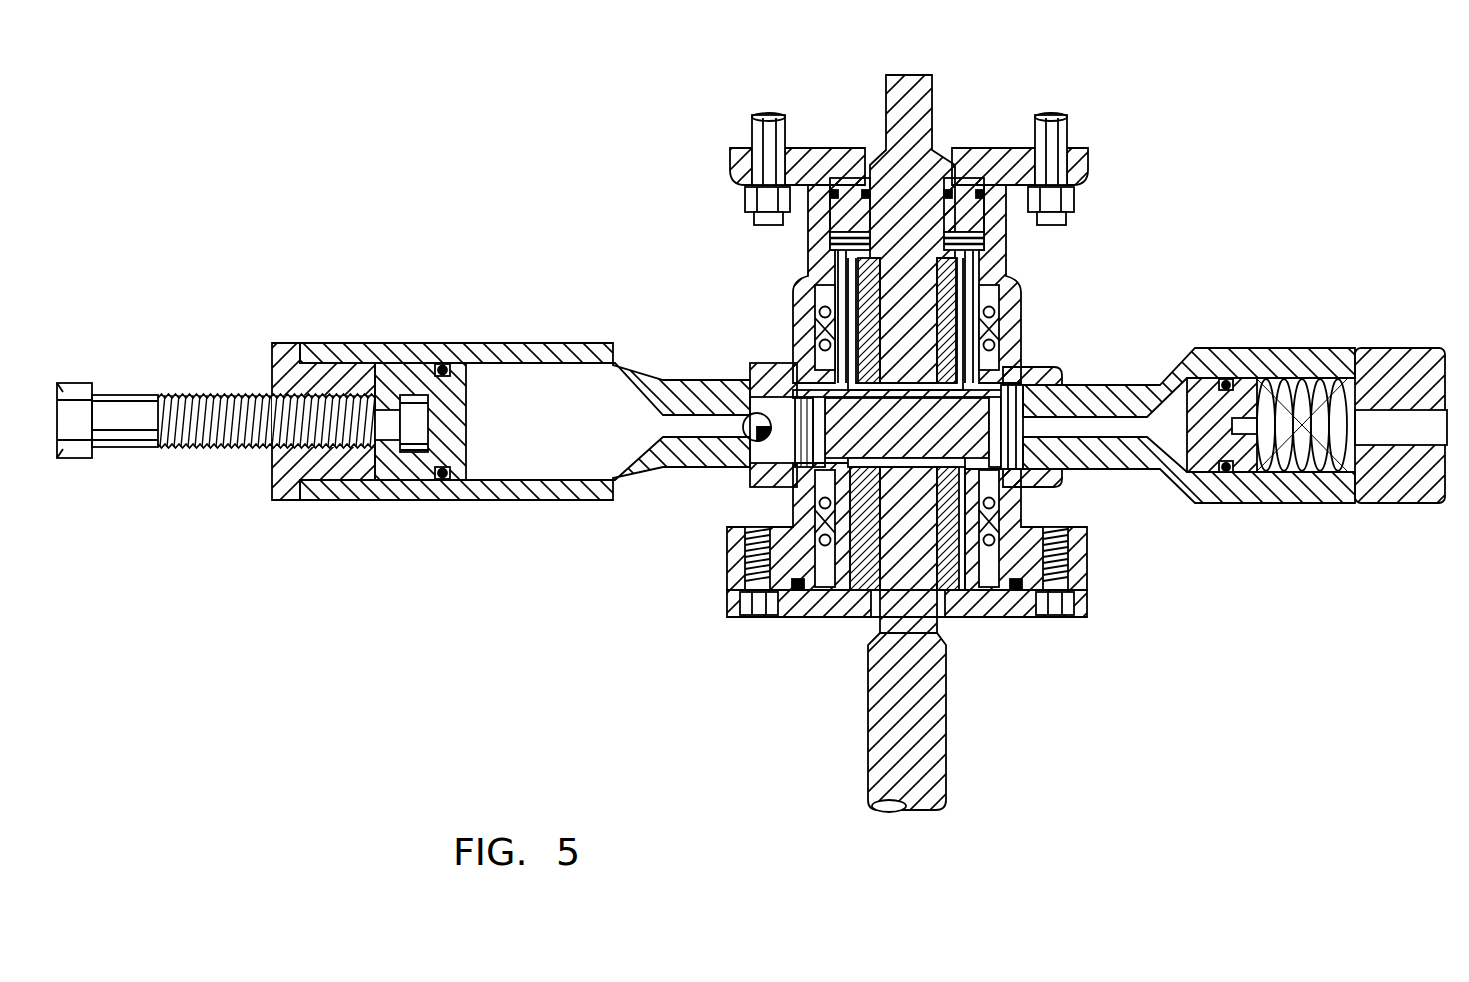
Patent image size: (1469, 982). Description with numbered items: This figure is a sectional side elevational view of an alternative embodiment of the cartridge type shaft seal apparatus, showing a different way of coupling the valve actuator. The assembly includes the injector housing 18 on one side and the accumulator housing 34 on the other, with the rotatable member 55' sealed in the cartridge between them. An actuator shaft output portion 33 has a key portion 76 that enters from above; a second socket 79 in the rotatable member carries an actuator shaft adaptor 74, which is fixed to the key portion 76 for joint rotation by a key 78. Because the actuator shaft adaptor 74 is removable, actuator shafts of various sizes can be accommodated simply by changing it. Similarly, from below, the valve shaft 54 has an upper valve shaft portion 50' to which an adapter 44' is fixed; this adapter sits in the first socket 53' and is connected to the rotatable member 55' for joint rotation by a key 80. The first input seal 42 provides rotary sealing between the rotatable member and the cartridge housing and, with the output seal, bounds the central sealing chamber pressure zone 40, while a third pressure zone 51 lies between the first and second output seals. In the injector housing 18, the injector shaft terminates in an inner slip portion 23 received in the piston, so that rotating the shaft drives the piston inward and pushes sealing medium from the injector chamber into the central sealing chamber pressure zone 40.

The injector housing 18 is at (403, 418).
The inner slip portion 23 is at (406, 400).
The actuator shaft output portion 33 is at (912, 90).
The accumulator housing 34 is at (1297, 357).
The central sealing chamber pressure zone 40 is at (1005, 437).
The first input seal 42 is at (812, 512).
The adapter 44' is at (1065, 541).
The upper valve shaft portion 50' is at (1065, 558).
The third pressure zone 51 is at (1000, 262).
The first socket 53' is at (907, 659).
The valve shaft 54 is at (905, 752).
The rotatable member 55' is at (765, 387).
The actuator shaft adaptor 74 is at (956, 285).
The key portion 76 is at (1010, 342).
The key 78 is at (832, 282).
The second socket 79 is at (1000, 300).
The key 80 is at (805, 587).